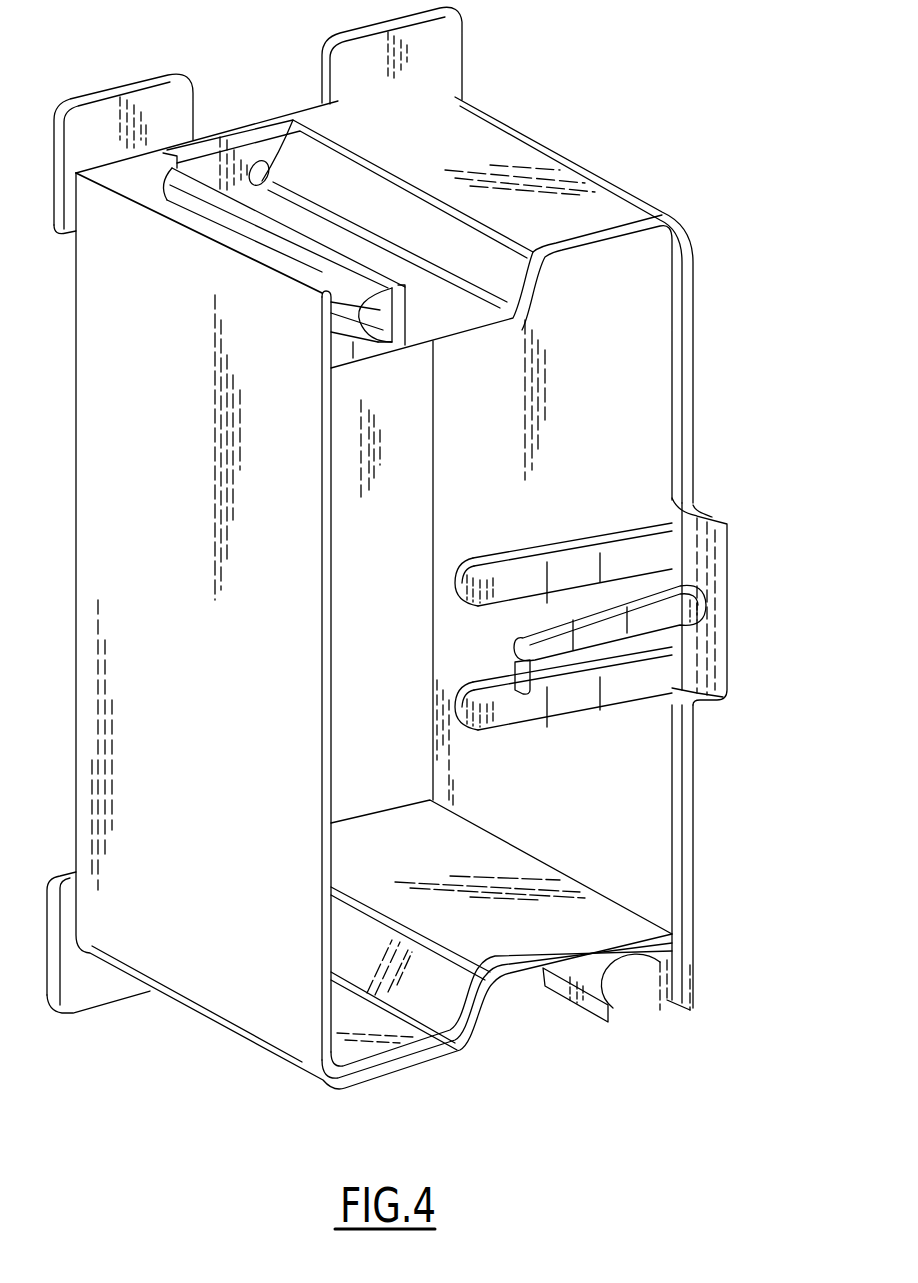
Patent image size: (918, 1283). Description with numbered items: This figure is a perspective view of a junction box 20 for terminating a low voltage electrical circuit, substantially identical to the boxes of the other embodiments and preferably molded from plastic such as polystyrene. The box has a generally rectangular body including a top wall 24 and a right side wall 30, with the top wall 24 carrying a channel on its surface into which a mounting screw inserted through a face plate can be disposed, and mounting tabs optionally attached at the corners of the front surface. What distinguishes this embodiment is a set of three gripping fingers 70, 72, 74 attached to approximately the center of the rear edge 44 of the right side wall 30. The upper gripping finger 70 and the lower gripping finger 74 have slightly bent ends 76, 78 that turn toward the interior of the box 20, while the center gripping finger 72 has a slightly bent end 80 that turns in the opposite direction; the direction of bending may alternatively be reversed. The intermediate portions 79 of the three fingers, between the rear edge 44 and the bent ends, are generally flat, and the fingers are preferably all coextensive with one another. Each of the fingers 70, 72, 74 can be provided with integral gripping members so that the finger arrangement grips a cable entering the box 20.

The junction box 20 is at (650, 169).
The top wall 24 is at (503, 152).
The right side wall 30 is at (645, 373).
The rear edge 44 is at (688, 466).
The upper gripping finger 70 is at (530, 556).
The center gripping finger 72 is at (700, 585).
The lower gripping finger 74 is at (518, 735).
The bent end 76 is at (455, 563).
The bent end 78 is at (455, 687).
The intermediate portions 79 is at (625, 558).
The bent end 80 is at (552, 680).